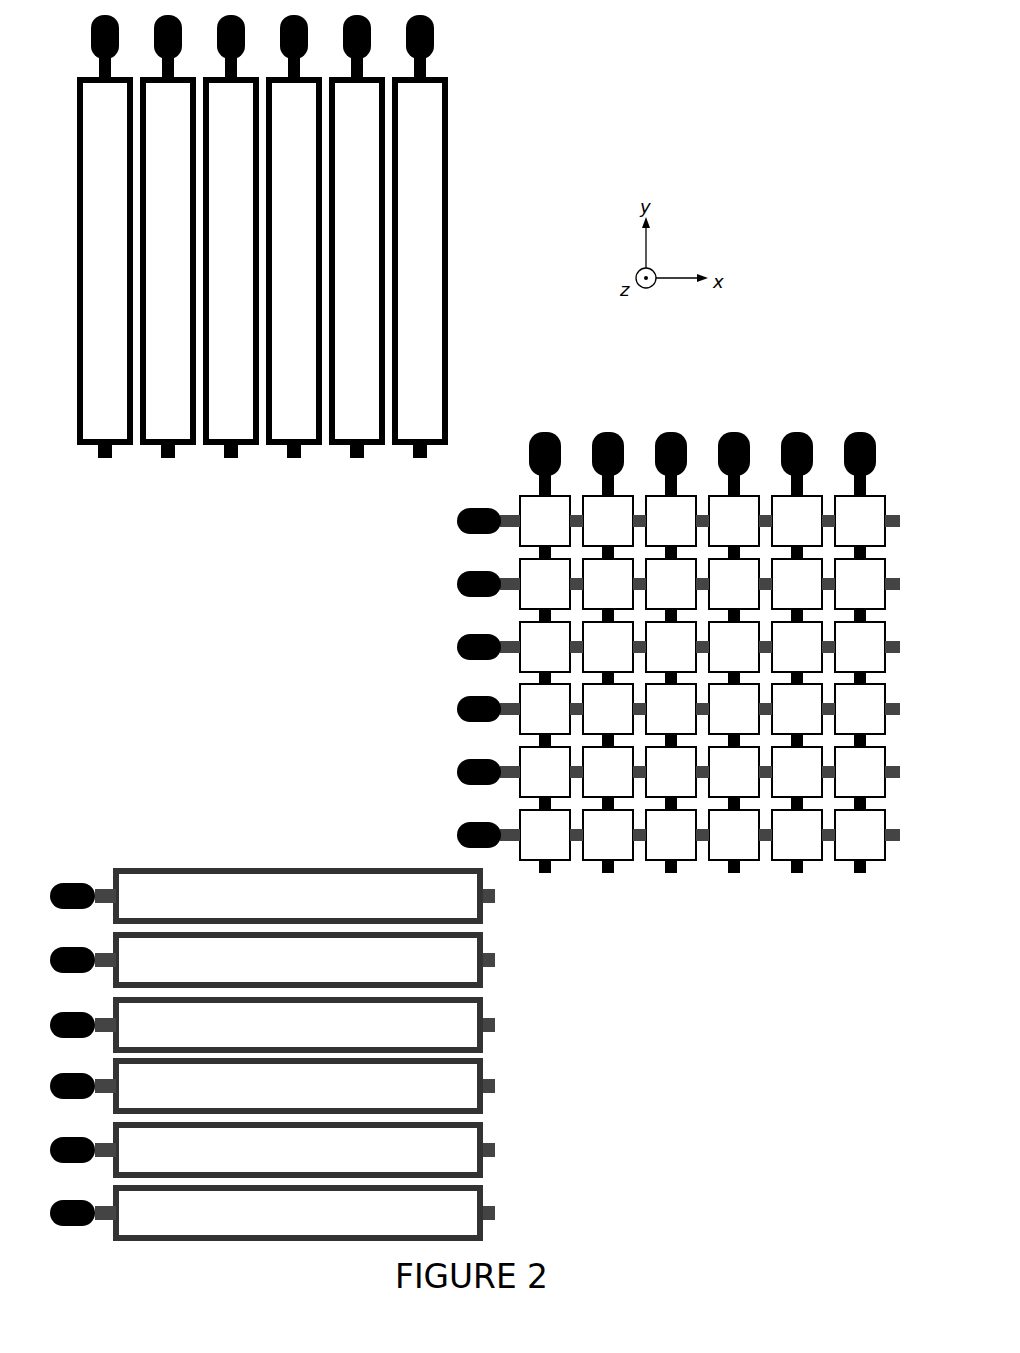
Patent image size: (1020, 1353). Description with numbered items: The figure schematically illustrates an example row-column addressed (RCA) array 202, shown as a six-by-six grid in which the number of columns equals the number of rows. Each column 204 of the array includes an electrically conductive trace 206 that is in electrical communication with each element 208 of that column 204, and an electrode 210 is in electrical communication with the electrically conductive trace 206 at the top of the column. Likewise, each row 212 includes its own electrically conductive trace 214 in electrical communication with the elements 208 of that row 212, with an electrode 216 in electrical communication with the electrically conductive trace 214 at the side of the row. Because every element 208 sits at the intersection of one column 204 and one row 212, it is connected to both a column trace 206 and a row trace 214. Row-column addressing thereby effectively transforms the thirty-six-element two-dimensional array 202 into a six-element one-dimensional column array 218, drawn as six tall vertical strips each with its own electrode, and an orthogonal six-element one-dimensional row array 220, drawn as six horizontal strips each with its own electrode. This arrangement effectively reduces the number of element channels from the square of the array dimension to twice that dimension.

The RCA array 202 is at (641, 695).
The column 204 is at (692, 890).
The electrically conductive trace 206 is at (667, 873).
The element 208 is at (533, 637).
The electrode 210 is at (677, 433).
The row 212 is at (483, 672).
The electrically conductive trace 214 is at (505, 643).
The electrode 216 is at (458, 640).
The 1-D column array 218 is at (565, 402).
The 1-D row array 220 is at (627, 887).